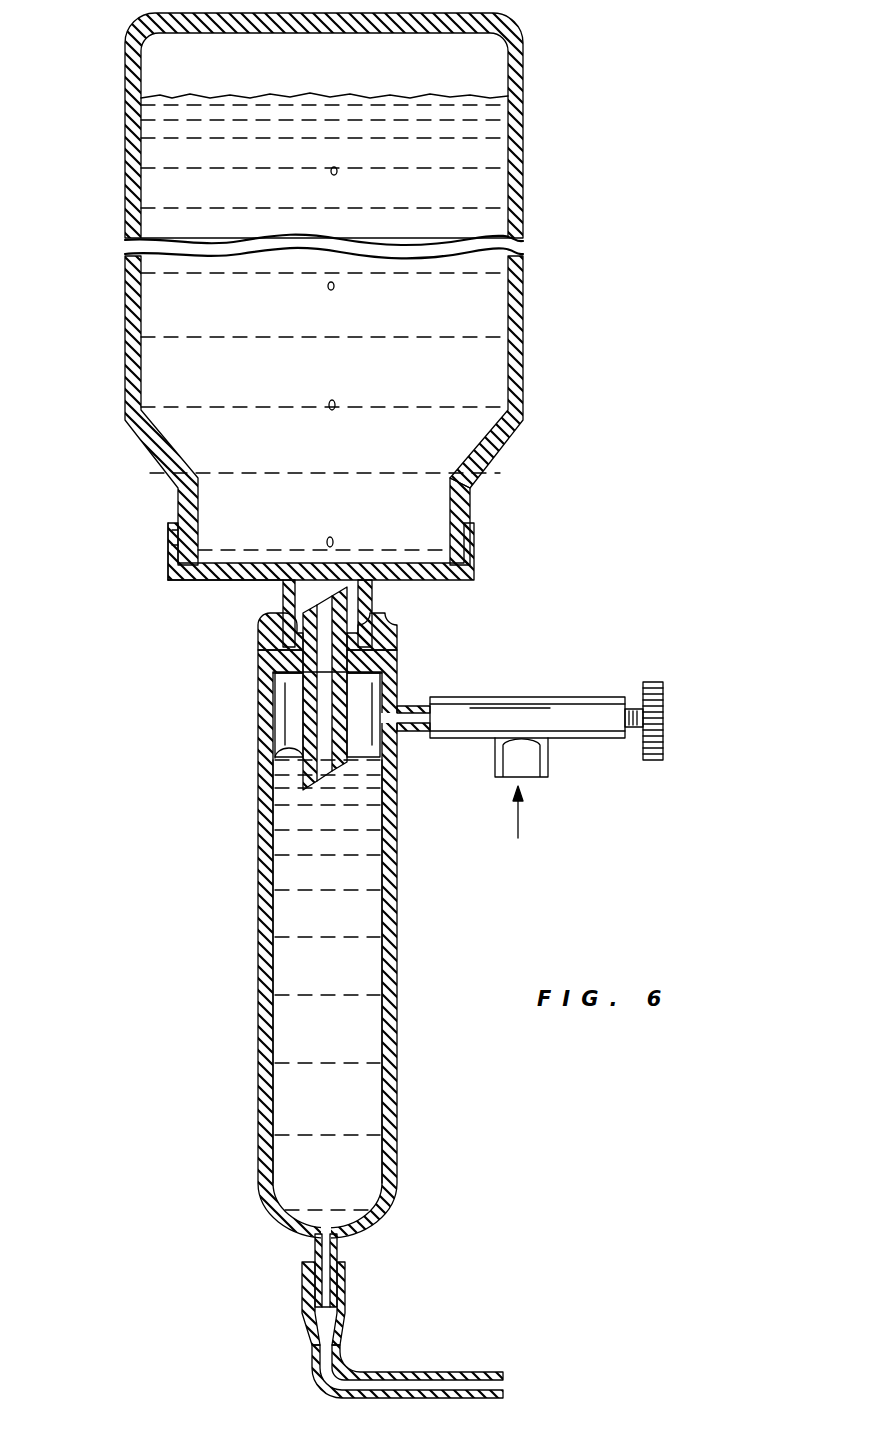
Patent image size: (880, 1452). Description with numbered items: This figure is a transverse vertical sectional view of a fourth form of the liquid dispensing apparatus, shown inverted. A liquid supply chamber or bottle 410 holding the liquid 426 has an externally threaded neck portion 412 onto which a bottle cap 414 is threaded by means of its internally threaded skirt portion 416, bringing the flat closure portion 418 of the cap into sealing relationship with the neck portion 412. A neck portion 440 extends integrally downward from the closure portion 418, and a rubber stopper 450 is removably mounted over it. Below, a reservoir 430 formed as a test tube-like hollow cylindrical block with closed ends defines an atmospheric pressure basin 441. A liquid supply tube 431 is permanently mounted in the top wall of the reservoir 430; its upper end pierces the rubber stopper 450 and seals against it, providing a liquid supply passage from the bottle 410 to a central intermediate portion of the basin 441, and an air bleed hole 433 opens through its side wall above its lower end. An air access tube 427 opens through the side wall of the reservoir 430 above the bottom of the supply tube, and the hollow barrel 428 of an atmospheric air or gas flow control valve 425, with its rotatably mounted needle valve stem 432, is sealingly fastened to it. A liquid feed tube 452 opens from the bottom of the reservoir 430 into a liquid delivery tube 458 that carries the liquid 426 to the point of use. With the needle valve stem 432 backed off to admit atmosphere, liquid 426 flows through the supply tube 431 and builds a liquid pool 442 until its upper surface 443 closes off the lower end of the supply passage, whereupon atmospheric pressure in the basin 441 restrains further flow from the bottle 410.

The liquid supply chamber or bottle 410 is at (525, 70).
The neck portion 412 is at (460, 507).
The bottle cap 414 is at (165, 575).
The skirt portion 416 is at (168, 540).
The flat closure portion 418 is at (230, 582).
The liquid 426 is at (483, 322).
The neck portion 440 is at (373, 600).
The rubber stopper 450 is at (397, 636).
The reservoir 430 is at (258, 923).
The liquid supply tube 431 is at (300, 704).
The atmospheric pressure basin 441 is at (290, 728).
The upper surface 443 is at (275, 750).
The air bleed hole 433 is at (347, 715).
The air access tube 427 is at (410, 733).
The atmospheric air or gas flow control valve 425 is at (592, 694).
The hollow barrel 428 is at (577, 740).
The needle valve stem 432 is at (665, 718).
The liquid pool 442 is at (357, 968).
The liquid feed tube 452 is at (335, 1258).
The liquid delivery tube 458 is at (425, 1372).